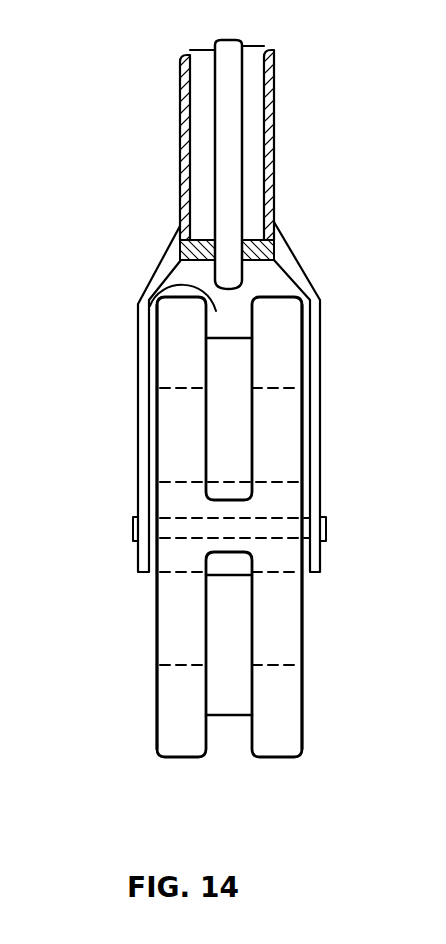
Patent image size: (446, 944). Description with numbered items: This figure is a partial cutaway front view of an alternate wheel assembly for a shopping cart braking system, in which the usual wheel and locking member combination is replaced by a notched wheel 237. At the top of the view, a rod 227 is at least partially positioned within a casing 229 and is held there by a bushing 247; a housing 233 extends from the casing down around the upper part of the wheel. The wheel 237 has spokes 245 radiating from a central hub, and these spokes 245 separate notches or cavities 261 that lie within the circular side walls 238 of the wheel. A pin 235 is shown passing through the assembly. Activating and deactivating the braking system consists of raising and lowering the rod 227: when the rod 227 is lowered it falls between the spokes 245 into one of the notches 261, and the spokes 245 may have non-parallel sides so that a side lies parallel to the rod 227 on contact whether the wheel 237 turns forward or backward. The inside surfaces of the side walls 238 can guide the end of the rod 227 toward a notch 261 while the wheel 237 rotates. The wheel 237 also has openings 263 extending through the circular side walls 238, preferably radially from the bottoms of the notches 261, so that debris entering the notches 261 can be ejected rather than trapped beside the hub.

The casing 229 is at (276, 126).
The rod 227 is at (236, 168).
The bushing 247 is at (270, 222).
The housing shell 233 is at (322, 298).
The spokes 245 is at (238, 362).
The openings 263 is at (153, 452).
The pin 235 is at (328, 528).
The circular side walls 238 is at (157, 693).
The notched wheel 237 is at (230, 565).
The notches 261 is at (148, 302).